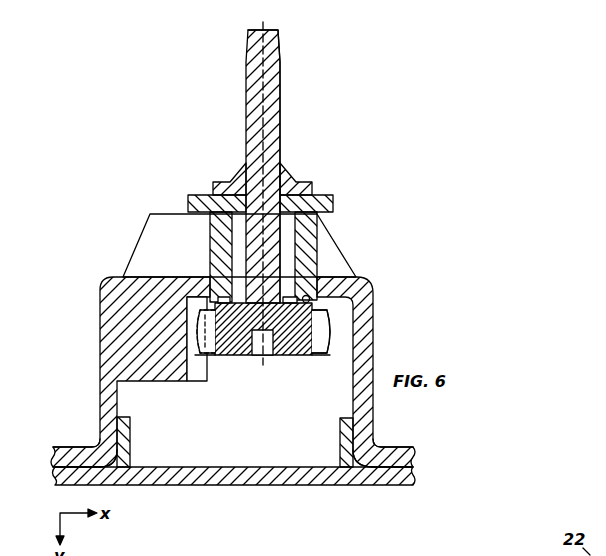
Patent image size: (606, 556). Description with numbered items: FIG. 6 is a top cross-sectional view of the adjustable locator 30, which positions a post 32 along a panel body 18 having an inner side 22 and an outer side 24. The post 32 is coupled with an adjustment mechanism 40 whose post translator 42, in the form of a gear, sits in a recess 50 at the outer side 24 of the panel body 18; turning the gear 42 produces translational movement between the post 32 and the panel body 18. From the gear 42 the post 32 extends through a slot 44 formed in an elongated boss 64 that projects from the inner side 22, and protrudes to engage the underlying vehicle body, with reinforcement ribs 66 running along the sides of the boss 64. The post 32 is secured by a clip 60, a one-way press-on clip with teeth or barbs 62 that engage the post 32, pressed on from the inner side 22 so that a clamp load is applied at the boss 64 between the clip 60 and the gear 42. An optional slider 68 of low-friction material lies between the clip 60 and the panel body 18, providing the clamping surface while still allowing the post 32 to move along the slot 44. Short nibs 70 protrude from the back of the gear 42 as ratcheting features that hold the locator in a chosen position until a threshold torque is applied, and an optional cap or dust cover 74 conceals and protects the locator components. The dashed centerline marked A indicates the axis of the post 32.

The axis A is at (264, 54).
The adjustable locator 30 is at (303, 85).
The post 32 is at (246, 106).
The teeth or barbs 62 is at (234, 176).
The clip 60 is at (300, 180).
The slider 68 is at (190, 199).
The slot 44 is at (238, 268).
The elongated boss 64 is at (313, 242).
The reinforcement ribs 66 is at (341, 267).
The inner side 22 is at (110, 278).
The nibs 70 is at (310, 300).
The post translator 42 is at (223, 356).
The adjustment mechanism 40 is at (322, 350).
The panel body 18 is at (77, 446).
The outer side 24 is at (374, 485).
The recess 50 is at (162, 437).
The cap or dust cover 74 is at (242, 484).